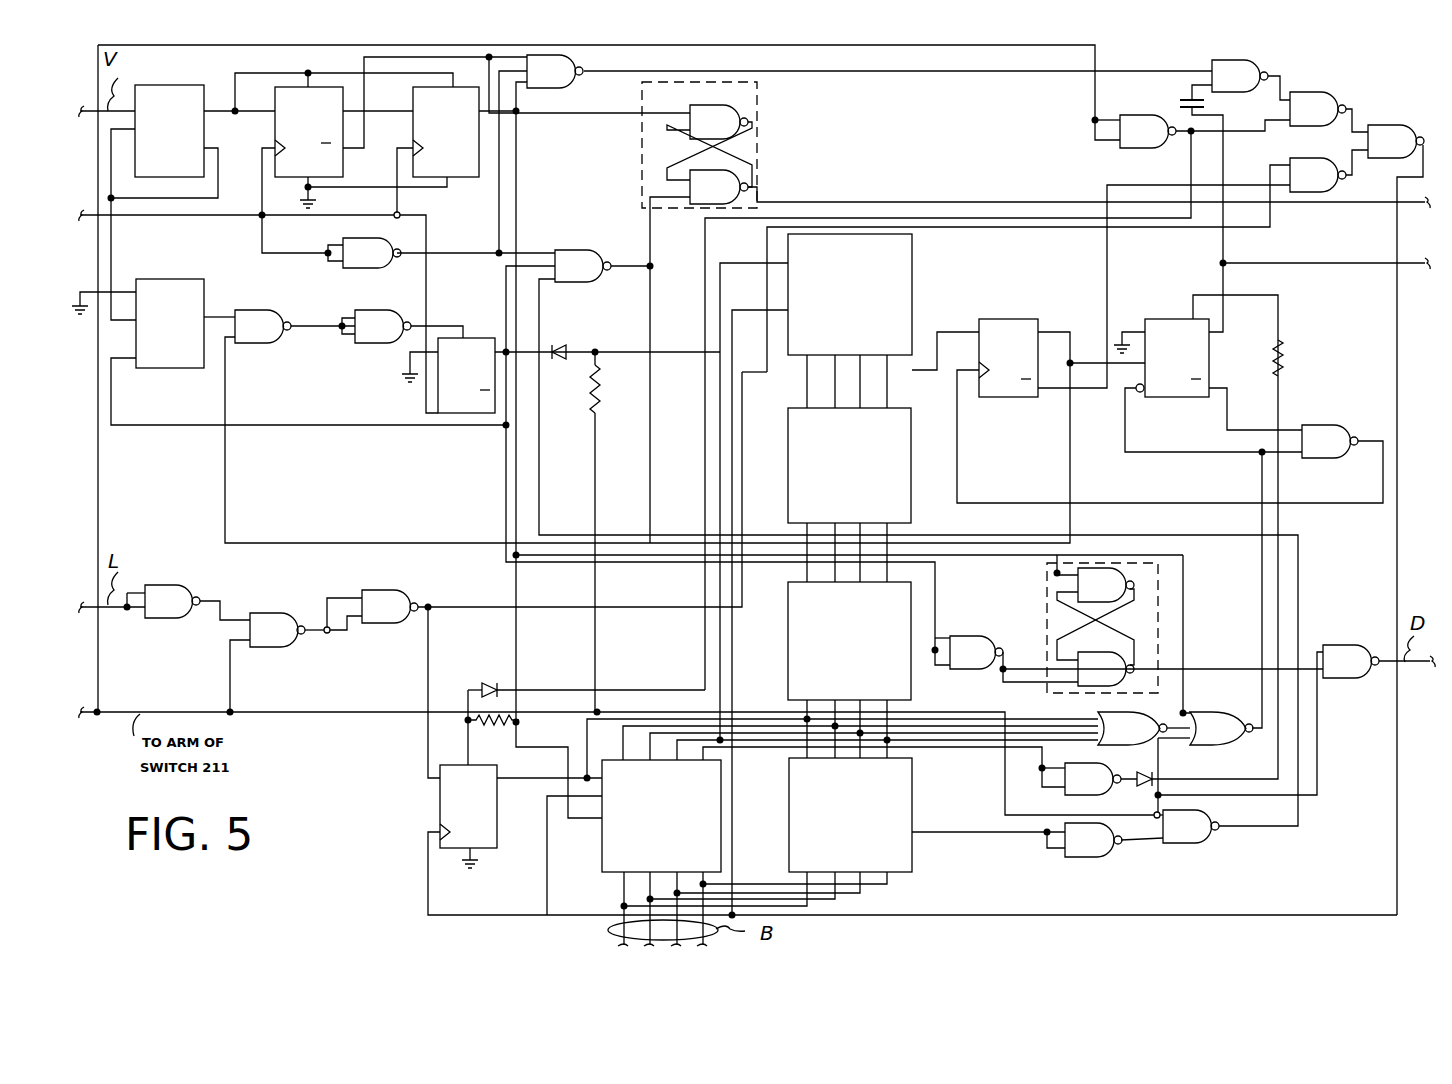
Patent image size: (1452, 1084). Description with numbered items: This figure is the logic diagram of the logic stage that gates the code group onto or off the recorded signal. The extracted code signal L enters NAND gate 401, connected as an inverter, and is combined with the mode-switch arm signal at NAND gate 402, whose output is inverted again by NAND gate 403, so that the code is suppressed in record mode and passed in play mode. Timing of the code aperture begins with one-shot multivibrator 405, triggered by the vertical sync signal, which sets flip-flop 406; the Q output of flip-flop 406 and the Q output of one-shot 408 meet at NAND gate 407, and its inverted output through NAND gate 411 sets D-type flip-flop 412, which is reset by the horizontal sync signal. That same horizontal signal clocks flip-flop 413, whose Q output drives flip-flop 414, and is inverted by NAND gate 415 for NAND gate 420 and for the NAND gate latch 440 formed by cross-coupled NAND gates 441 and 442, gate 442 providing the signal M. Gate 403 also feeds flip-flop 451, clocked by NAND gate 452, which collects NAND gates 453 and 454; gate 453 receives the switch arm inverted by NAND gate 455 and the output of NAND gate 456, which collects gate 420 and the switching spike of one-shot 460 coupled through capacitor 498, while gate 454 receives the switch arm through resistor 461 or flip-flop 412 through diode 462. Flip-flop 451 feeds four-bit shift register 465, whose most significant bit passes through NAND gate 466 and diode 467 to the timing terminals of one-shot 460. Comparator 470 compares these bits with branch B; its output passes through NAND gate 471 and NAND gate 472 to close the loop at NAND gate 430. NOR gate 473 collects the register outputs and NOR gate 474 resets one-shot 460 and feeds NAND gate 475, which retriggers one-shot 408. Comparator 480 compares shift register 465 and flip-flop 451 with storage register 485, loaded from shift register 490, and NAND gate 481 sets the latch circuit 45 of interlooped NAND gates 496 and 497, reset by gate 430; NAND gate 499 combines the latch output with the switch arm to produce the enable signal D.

The flip-flop (cross-coupled NAND gates 496, 497) 45 is at (1160, 606).
The NAND gate 401 is at (173, 585).
The NAND gate 402 is at (290, 602).
The NAND gate 403 is at (405, 579).
The one-shot multivibrator 405 is at (194, 85).
The flip-flop 406 is at (186, 266).
The NAND gate 407 is at (286, 300).
The one-shot 408 is at (1032, 320).
The NAND gate 411 is at (396, 302).
The D-type flip-flop 412 is at (476, 338).
The flip-flop 413 is at (330, 84).
The flip-flop 414 is at (476, 180).
The NAND gate 415 is at (346, 238).
The NAND gate 420 is at (560, 55).
The NAND gate 430 is at (594, 282).
The NAND gate latch 440 is at (757, 152).
The NAND gate 441 is at (728, 111).
The NAND gate 442 is at (690, 206).
The flip-flop 451 is at (440, 811).
The NAND gate 452 is at (1418, 112).
The NAND gate 453 is at (1338, 82).
The NAND gate 454 is at (1330, 152).
The NAND gate 455 is at (1164, 106).
The NAND gate 456 is at (1250, 46).
The one-shot 460 is at (1180, 320).
The resistor 461 is at (601, 394).
The diode 462 is at (578, 335).
The shift register 465 is at (602, 850).
The NAND gate 466 is at (1062, 797).
The diode 467 is at (1155, 779).
The comparator 470 is at (914, 793).
The NAND gate 471 is at (1082, 857).
The NAND gate 472 is at (1186, 843).
The NOR gate 473 is at (1158, 708).
The NOR gate 474 is at (1238, 702).
The NAND gate 475 is at (1344, 412).
The comparator 480 is at (788, 642).
The NAND gate 481 is at (998, 622).
The storage register 485 is at (902, 408).
The shift register 490 is at (877, 234).
The NAND gate 496 is at (1120, 568).
The NAND gate 497 is at (1100, 639).
The capacitor 498 is at (1204, 108).
The NAND gate 499 is at (1358, 645).